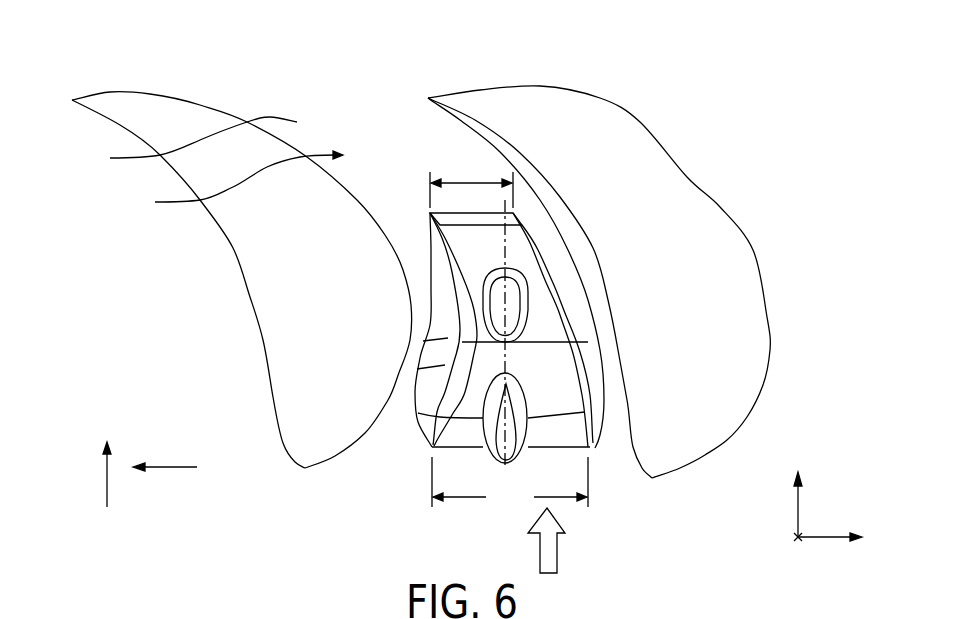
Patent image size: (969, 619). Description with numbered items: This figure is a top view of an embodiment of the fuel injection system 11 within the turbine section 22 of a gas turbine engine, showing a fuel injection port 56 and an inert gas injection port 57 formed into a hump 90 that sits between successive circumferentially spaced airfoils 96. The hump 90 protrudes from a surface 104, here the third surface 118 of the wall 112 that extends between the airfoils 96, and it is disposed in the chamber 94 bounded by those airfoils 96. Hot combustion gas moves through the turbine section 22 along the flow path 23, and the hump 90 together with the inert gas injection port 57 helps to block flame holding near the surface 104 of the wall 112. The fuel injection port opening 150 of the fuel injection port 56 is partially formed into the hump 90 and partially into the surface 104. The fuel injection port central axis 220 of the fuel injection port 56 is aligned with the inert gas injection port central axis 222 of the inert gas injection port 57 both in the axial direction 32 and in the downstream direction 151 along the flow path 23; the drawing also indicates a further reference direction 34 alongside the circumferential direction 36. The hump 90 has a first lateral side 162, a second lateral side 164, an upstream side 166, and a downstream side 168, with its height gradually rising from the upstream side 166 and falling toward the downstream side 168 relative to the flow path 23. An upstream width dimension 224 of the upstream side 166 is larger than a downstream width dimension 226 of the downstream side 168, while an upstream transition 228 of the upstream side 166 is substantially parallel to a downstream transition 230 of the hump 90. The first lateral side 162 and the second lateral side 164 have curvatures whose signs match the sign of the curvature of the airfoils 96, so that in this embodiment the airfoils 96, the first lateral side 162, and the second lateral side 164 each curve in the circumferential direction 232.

The fuel injection system 11 is at (280, 33).
The turbine section 22 is at (139, 65).
The flow path 23 is at (557, 553).
The axial direction 32 is at (797, 500).
The axial direction 34 is at (797, 537).
The circumferential direction 36 is at (823, 537).
The fuel injection port 56 is at (522, 446).
The inert gas injection port 57 is at (513, 288).
The hump 90 is at (590, 447).
The chamber 94 is at (377, 135).
The airfoils 96 is at (212, 253).
The surface 104 is at (414, 189).
The wall 112 is at (230, 184).
The third surface 118 is at (186, 145).
The fuel injection port opening 150 is at (526, 415).
The downstream direction 151 is at (107, 467).
The first lateral side 162 is at (425, 329).
The second lateral side 164 is at (588, 292).
The upstream side 166 is at (460, 505).
The downstream side 168 is at (460, 167).
The fuel injection port central axis 220 is at (518, 408).
The inert gas injection port central axis 222 is at (500, 298).
The upstream width dimension 224 is at (510, 485).
The downstream width dimension 226 is at (474, 181).
The upstream transition 228 is at (457, 440).
The downstream transition 230 is at (500, 210).
The circumferential direction 232 is at (170, 467).